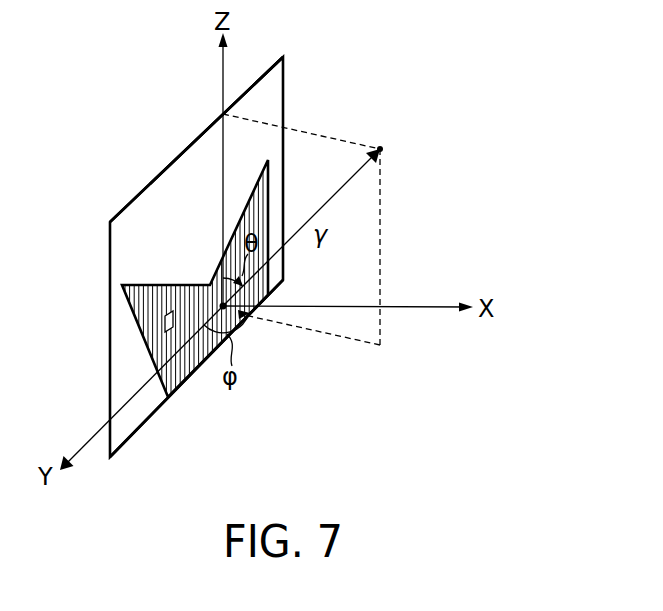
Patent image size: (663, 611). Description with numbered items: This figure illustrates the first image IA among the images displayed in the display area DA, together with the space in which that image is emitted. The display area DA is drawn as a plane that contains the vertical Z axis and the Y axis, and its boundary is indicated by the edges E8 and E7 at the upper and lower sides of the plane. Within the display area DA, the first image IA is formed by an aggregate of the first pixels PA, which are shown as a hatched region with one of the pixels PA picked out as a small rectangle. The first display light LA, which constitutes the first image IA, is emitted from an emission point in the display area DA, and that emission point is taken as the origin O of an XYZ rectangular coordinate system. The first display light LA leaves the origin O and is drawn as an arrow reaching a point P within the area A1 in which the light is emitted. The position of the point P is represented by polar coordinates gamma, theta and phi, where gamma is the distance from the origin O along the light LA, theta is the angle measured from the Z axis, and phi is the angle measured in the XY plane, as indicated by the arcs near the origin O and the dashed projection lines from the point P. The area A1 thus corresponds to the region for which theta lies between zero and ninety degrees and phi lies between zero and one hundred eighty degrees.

The area A1 is at (446, 90).
The first image IA is at (273, 92).
The display area DA is at (192, 144).
The edge E8 is at (142, 191).
The edge E7 is at (152, 418).
The first pixels PA is at (165, 327).
The origin O is at (219, 302).
The first display light LA is at (301, 227).
The point P is at (430, 152).